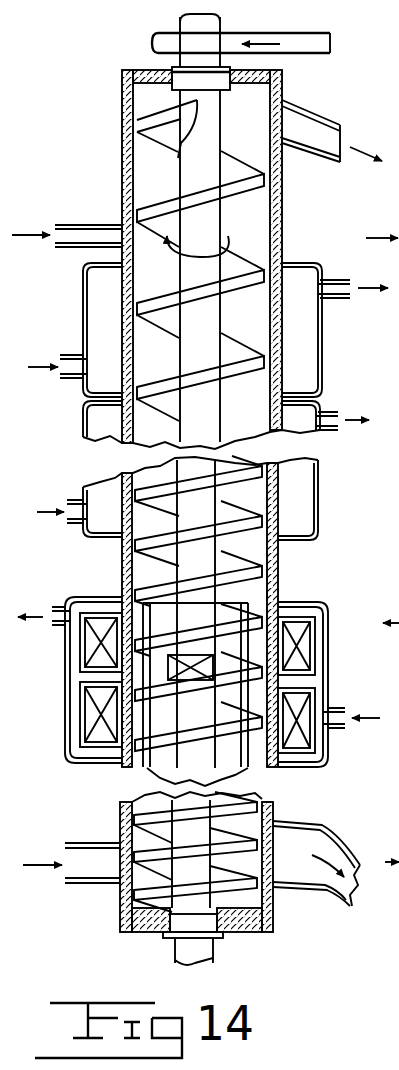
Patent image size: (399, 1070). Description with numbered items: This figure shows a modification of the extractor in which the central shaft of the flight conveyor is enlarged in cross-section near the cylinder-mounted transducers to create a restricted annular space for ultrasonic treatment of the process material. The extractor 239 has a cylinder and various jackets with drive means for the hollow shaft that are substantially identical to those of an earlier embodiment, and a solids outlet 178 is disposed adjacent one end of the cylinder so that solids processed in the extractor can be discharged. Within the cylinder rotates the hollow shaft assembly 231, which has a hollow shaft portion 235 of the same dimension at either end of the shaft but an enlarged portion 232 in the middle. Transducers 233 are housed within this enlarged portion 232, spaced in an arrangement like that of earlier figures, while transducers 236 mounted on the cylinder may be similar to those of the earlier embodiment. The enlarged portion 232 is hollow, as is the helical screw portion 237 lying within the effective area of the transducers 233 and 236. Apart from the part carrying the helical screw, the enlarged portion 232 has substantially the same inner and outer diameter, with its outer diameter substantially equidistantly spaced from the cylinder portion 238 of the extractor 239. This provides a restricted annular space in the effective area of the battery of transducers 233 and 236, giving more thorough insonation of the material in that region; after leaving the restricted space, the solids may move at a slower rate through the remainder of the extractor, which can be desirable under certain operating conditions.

The extractor 239 is at (116, 108).
The hollow shaft assembly 231 is at (224, 128).
The hollow shaft portion 235 is at (222, 142).
The solids outlet 178 is at (306, 111).
The helical screw portion 237 is at (278, 588).
The enlarged portion 232 is at (208, 628).
The transducers 233 is at (200, 681).
The transducers 236 is at (318, 661).
The cylinder portion 238 is at (274, 812).